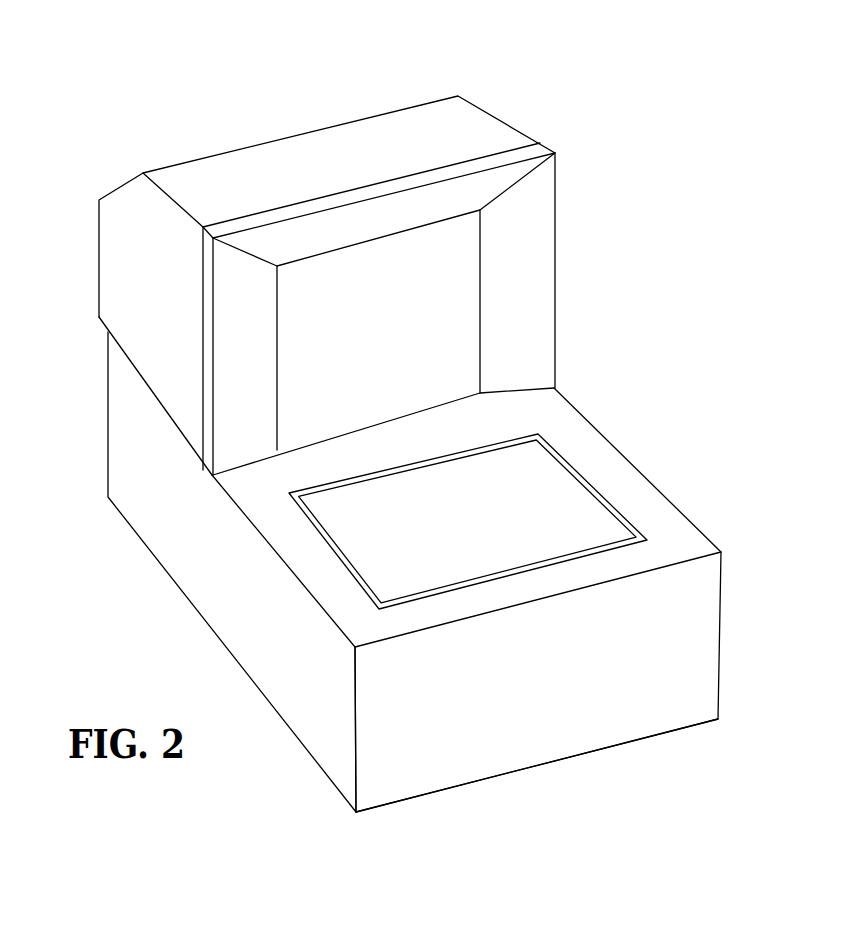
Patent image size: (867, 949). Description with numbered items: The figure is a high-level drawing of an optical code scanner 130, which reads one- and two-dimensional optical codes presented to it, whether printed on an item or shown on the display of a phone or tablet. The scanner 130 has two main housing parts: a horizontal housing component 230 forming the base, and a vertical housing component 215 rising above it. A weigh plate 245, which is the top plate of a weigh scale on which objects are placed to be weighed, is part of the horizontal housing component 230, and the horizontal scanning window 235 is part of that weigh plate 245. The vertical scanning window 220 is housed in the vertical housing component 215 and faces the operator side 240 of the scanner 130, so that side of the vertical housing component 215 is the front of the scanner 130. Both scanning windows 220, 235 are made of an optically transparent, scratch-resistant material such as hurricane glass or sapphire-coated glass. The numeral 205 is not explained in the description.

The optical code scanner 130 is at (124, 59).
The lower housing (base) 205 is at (127, 445).
The vertical housing component 215 is at (473, 127).
The vertical scanning window 220 is at (433, 283).
The horizontal housing component 230 is at (598, 460).
The horizontal scanning window 235 is at (567, 532).
The operator side 240 is at (557, 642).
The weigh plate 245 is at (553, 445).